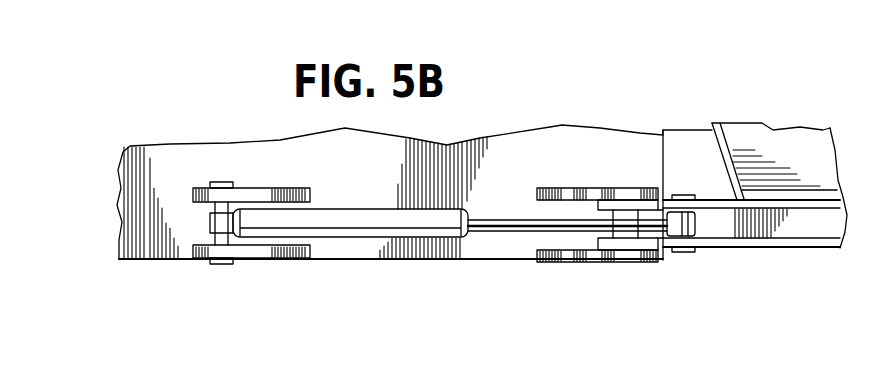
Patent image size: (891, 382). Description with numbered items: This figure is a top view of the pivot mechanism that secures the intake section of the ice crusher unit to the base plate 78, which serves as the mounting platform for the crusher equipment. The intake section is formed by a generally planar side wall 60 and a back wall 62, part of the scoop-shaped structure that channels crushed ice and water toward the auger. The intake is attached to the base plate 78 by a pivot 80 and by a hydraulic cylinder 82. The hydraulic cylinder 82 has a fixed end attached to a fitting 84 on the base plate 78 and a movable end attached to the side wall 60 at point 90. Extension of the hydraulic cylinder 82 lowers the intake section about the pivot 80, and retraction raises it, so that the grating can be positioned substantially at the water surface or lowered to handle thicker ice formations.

The base plate 78 is at (353, 167).
The fitting 84 is at (280, 260).
The hydraulic cylinder 82 is at (355, 230).
The pivot 80 is at (628, 255).
The point 90 is at (683, 253).
The side wall 60 is at (775, 243).
The back wall 62 is at (767, 133).